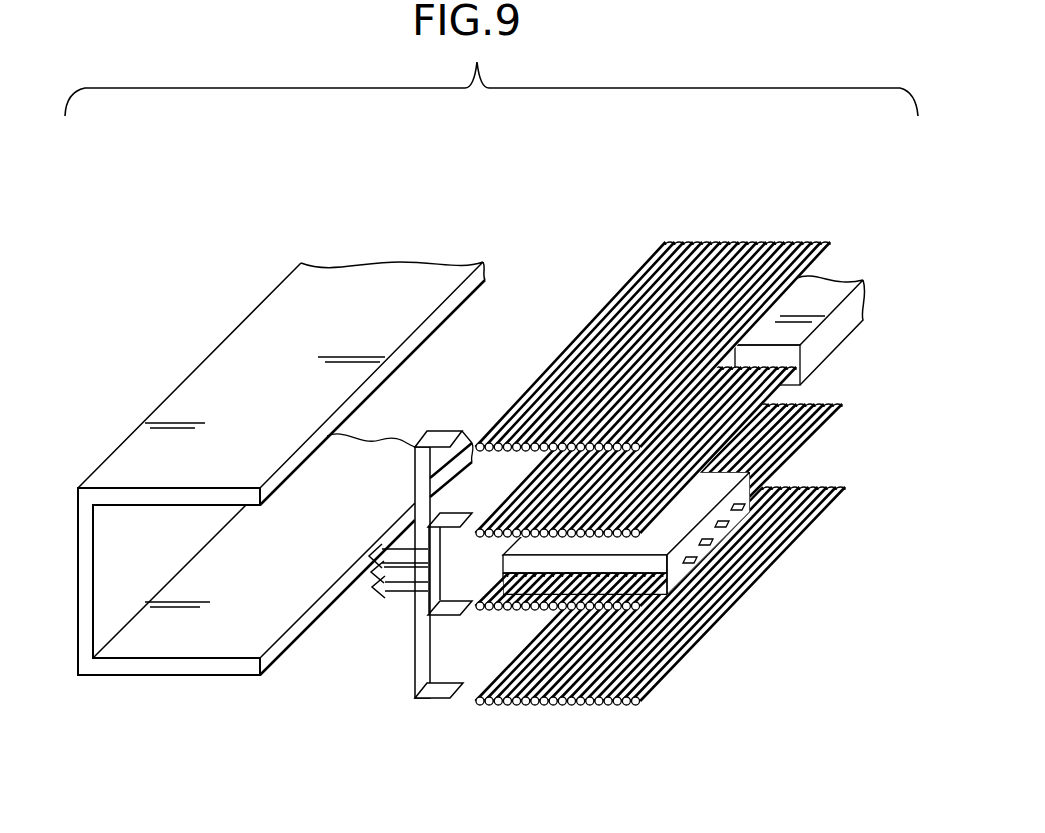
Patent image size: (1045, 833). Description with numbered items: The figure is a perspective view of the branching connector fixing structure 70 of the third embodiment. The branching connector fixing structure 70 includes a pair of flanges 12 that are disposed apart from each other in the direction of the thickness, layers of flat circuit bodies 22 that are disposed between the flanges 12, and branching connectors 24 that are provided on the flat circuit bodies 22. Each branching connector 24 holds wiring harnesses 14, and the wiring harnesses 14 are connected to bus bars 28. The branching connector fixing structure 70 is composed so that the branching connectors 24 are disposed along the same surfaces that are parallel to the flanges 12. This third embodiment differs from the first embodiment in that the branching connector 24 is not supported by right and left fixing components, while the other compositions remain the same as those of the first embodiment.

The flange 12 is at (236, 342).
The wiring harness 14 is at (660, 474).
The flat circuit body 22 is at (648, 250).
The branching connector 24 is at (669, 525).
The bus bar 28 is at (707, 543).
The branching connector fixing structure 70 is at (581, 251).